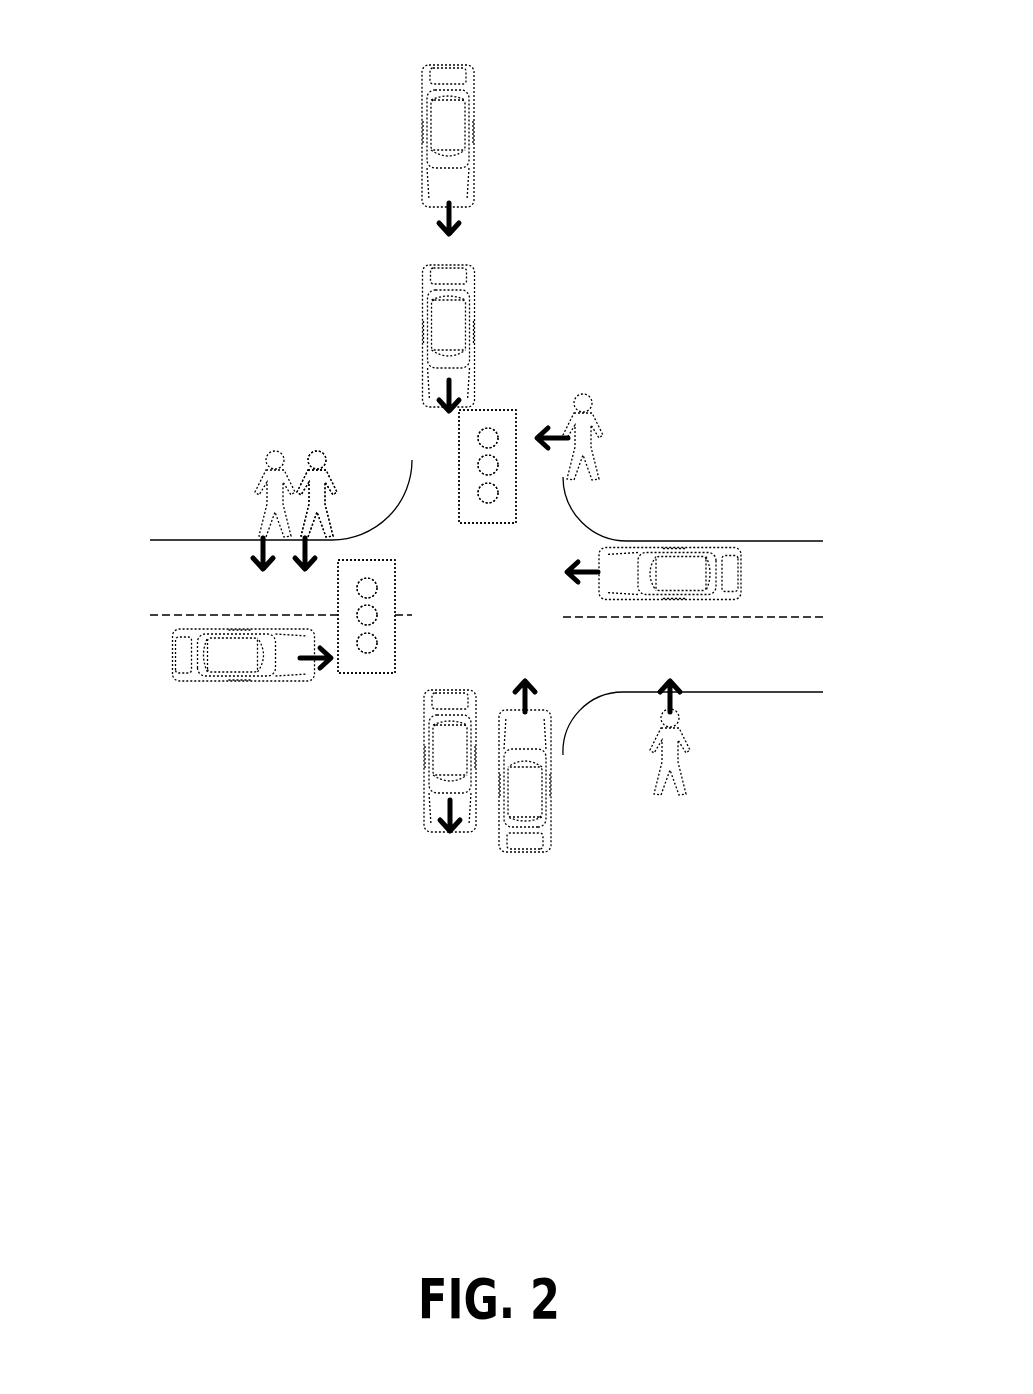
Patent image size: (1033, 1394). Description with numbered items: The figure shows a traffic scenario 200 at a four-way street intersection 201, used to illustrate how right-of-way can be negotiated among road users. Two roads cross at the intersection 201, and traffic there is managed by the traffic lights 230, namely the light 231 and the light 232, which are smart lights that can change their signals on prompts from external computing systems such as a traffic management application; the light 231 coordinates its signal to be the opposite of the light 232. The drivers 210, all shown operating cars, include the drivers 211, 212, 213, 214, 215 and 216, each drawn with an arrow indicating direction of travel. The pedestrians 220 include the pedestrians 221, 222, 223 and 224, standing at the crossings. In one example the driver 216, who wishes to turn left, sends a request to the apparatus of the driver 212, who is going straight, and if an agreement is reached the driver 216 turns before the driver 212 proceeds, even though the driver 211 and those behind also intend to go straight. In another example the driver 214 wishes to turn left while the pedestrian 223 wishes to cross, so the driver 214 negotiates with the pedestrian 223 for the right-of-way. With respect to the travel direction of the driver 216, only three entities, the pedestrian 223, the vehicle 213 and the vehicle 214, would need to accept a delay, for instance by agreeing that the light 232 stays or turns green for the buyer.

The traffic scenario 200 is at (296, 1032).
The street intersection 201 is at (487, 616).
The drivers 210 is at (422, 143).
The driver 211 is at (343, 117).
The driver 212 is at (420, 330).
The vehicle 213 is at (668, 548).
The driver 214 is at (246, 692).
The driver 215 is at (452, 838).
The driver 216 is at (526, 856).
The pedestrians 220 is at (255, 496).
The pedestrian 221 is at (230, 462).
The pedestrian 222 is at (317, 448).
The pedestrian 223 is at (603, 443).
The pedestrian 224 is at (692, 752).
The traffic signal 230 is at (516, 410).
The light 231 is at (337, 597).
The light 232 is at (516, 410).